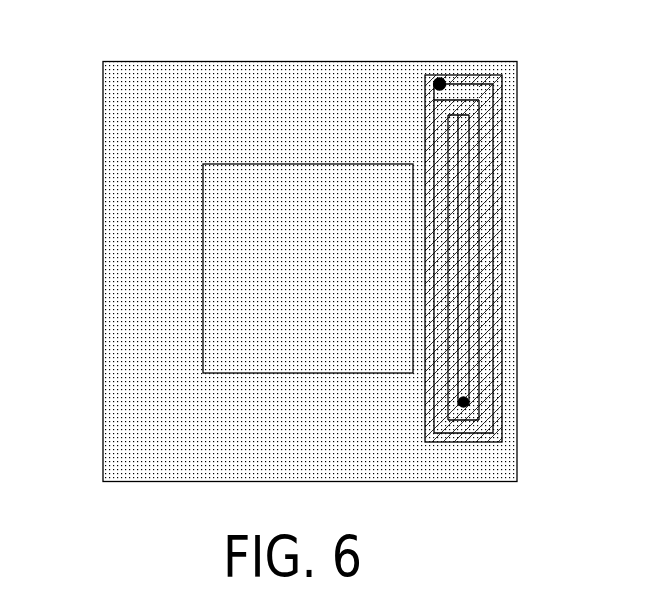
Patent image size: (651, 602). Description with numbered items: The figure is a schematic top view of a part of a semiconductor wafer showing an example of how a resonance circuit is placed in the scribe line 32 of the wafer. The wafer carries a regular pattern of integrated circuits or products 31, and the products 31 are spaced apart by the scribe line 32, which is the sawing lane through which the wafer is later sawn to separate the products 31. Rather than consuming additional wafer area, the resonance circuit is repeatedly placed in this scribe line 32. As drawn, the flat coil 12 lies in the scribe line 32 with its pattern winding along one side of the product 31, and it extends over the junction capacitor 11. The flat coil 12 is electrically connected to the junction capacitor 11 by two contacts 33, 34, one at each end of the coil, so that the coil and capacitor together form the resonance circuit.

The junction capacitor 11 is at (504, 437).
The flat coil 12 is at (496, 179).
The product 31 is at (324, 282).
The scribe line 32 is at (112, 275).
The contact 33 is at (440, 78).
The contact 34 is at (468, 402).